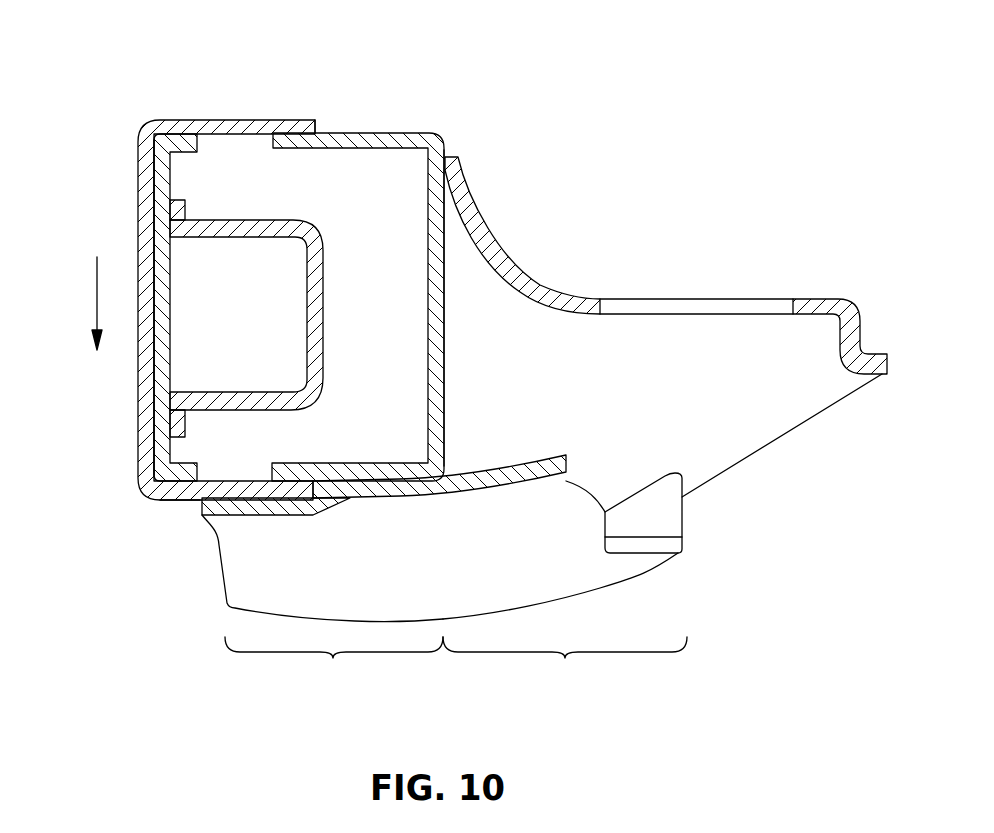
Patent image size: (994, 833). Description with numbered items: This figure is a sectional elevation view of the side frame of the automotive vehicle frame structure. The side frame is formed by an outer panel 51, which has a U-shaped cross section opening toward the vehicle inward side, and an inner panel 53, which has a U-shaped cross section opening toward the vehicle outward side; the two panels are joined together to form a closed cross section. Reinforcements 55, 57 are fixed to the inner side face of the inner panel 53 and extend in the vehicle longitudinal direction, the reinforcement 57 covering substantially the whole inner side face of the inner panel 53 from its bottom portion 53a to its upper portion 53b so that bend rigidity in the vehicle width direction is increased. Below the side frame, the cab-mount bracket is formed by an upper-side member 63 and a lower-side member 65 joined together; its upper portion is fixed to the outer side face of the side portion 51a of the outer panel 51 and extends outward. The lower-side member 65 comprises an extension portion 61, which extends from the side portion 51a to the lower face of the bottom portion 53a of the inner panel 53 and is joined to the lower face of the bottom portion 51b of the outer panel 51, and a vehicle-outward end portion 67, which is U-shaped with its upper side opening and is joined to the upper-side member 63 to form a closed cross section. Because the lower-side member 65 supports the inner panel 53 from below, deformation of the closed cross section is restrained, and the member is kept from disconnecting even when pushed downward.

The outer panel 51 is at (382, 133).
The side portion of the outer panel 51a is at (447, 341).
The bottom portion of the outer panel 51b is at (387, 482).
The inner panel 53 is at (197, 120).
The bottom portion of the inner panel 53a is at (180, 503).
The upper portion of the inner panel 53b is at (299, 107).
The reinforcement 55 is at (245, 220).
The reinforcement 57 is at (160, 187).
The extension portion 61 is at (322, 607).
The upper-side member 63 is at (483, 233).
The lower-side member 65 is at (578, 522).
The vehicle-outward end portion 67 is at (565, 626).